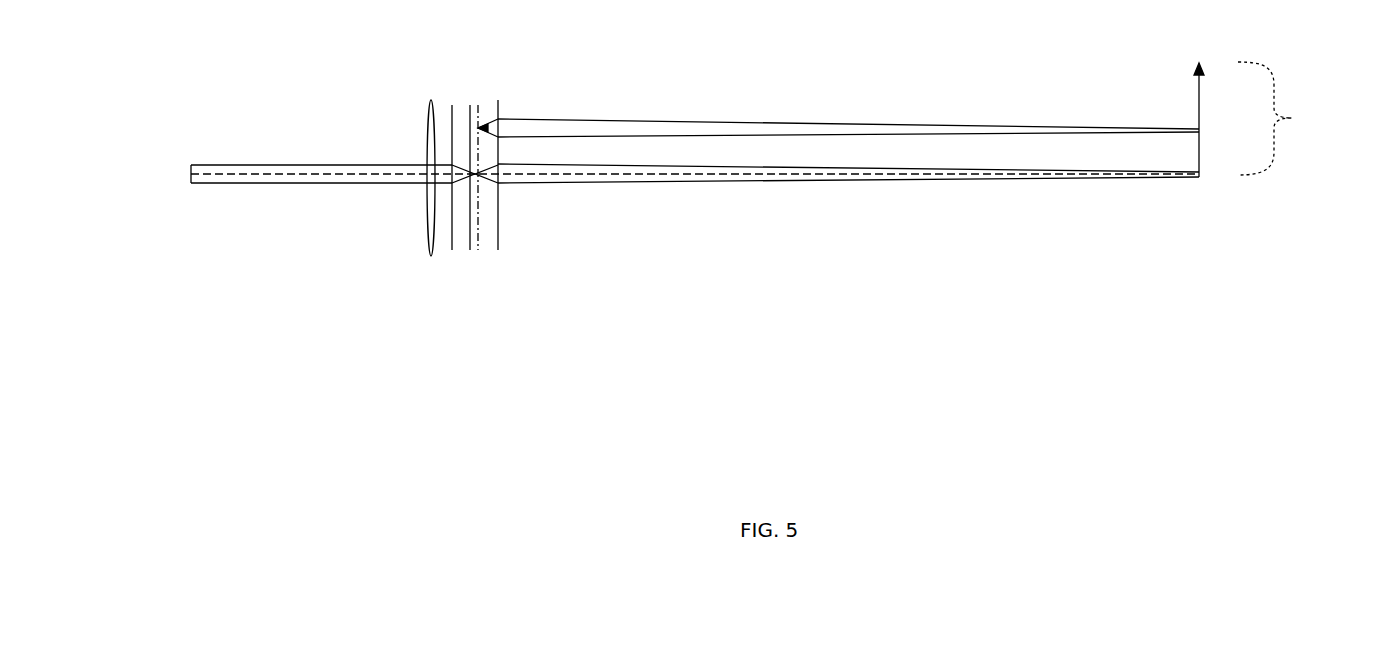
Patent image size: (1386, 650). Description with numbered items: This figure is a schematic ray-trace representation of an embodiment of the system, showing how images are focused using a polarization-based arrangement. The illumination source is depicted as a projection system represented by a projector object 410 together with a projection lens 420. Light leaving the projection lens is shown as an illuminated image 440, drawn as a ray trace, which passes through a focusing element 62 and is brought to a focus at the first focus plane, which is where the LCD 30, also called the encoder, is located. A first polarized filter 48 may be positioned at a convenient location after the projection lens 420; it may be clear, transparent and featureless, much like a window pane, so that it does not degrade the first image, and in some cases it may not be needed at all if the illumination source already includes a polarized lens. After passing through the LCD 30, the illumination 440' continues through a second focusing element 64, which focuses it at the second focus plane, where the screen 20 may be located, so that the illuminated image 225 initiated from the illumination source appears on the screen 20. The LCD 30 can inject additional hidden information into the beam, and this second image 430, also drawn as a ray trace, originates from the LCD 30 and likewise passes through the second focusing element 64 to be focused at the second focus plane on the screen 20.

The screen 20 is at (1285, 118).
The LCD 30 is at (478, 250).
The first polarized filter 48 is at (470, 250).
The focusing element 62 is at (452, 102).
The second focusing element 64 is at (498, 100).
The illuminated image 225 is at (1200, 110).
The projector object 410 is at (189, 172).
The projection lens 420 is at (428, 236).
The second image 430 is at (656, 120).
The illuminated image 440 is at (344, 149).
The illumination 440' is at (848, 204).